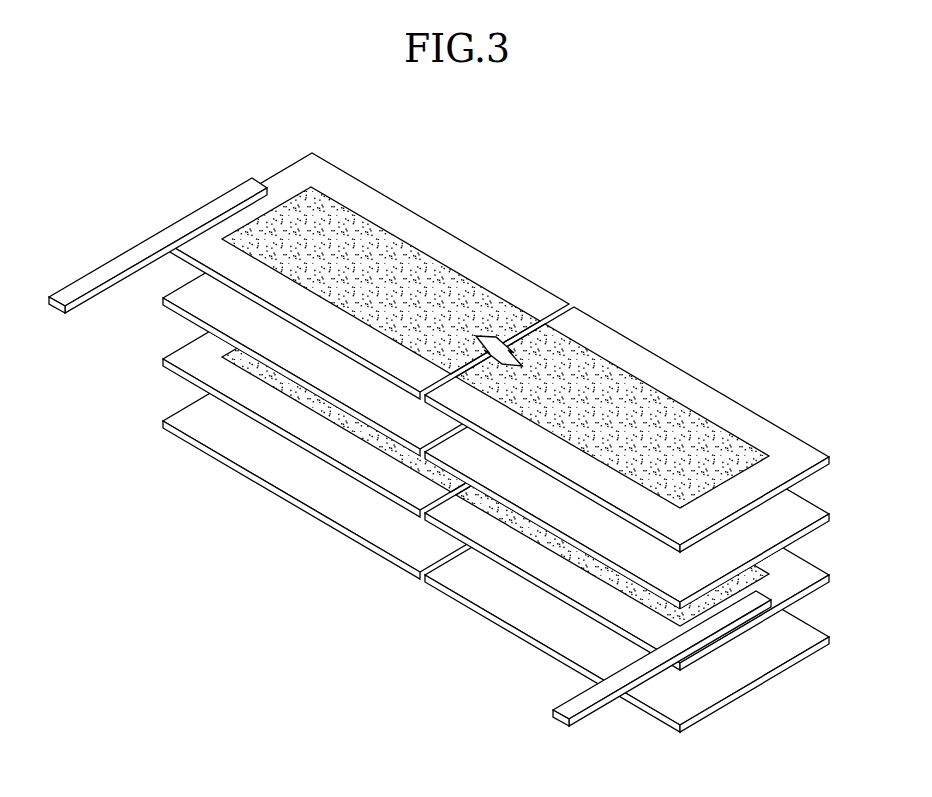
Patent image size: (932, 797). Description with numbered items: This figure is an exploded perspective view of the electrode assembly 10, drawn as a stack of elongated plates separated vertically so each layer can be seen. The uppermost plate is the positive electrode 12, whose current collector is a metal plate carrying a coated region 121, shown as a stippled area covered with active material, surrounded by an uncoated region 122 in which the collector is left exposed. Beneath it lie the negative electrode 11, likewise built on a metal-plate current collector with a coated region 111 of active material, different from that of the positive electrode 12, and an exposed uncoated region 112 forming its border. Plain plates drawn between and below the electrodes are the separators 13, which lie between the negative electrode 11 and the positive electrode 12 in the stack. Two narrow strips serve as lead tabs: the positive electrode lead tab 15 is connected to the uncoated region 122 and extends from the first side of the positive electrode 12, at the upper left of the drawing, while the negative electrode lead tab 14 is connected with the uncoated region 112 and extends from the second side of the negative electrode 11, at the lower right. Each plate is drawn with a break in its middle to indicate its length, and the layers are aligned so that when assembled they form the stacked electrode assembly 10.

The electrode assembly 10 is at (477, 421).
The negative electrode 11 is at (534, 500).
The coated region 111 is at (733, 583).
The uncoated region 112 is at (793, 580).
The positive electrode 12 is at (496, 316).
The coated region 121 is at (352, 233).
The uncoated region 122 is at (392, 222).
The separator 13 is at (190, 305).
The negative electrode lead tab 14 is at (587, 703).
The positive electrode lead tab 15 is at (108, 275).